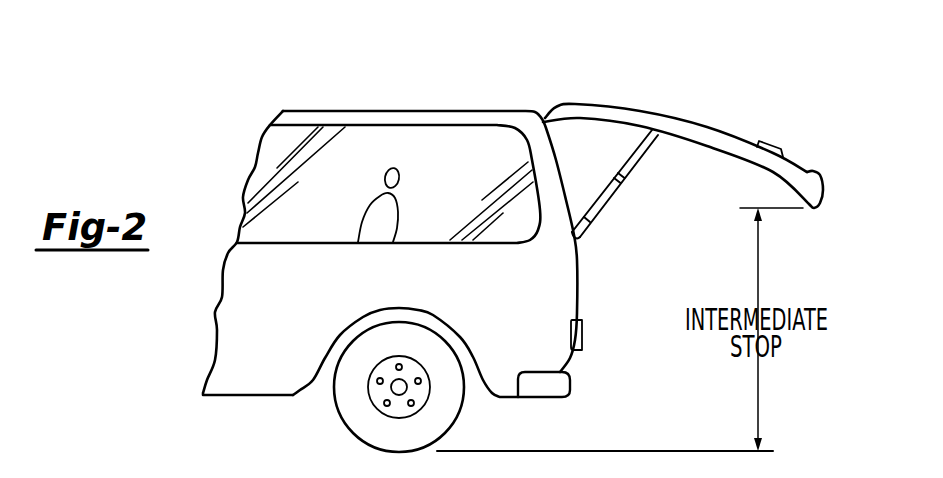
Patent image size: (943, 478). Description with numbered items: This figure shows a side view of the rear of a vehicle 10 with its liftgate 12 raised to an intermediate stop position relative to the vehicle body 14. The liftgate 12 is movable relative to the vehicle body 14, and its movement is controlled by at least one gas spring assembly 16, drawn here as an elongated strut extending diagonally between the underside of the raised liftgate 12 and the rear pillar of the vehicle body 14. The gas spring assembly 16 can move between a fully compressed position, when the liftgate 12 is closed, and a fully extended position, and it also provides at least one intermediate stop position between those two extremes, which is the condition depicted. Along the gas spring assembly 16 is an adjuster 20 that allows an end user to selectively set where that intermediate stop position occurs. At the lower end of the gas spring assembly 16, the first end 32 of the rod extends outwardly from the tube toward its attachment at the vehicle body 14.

The vehicle 10 is at (521, 93).
The liftgate 12 is at (703, 123).
The vehicle body 14 is at (560, 300).
The gas spring assembly 16 is at (612, 200).
The adjuster 20 is at (620, 180).
The first end 32 is at (580, 238).